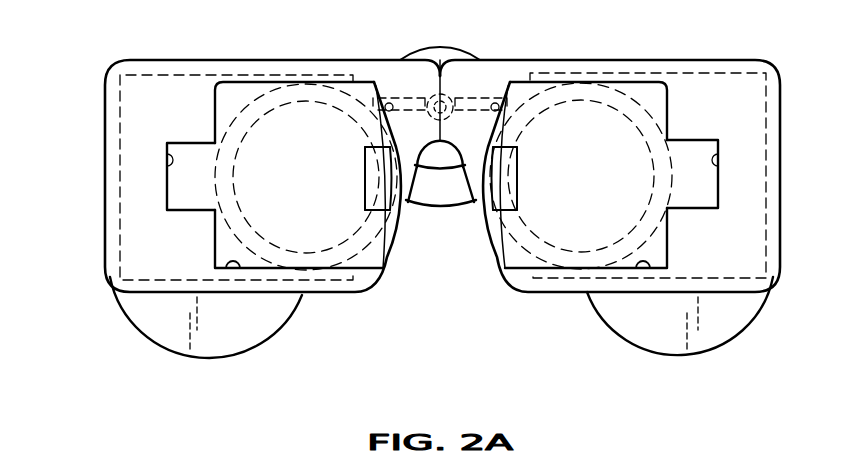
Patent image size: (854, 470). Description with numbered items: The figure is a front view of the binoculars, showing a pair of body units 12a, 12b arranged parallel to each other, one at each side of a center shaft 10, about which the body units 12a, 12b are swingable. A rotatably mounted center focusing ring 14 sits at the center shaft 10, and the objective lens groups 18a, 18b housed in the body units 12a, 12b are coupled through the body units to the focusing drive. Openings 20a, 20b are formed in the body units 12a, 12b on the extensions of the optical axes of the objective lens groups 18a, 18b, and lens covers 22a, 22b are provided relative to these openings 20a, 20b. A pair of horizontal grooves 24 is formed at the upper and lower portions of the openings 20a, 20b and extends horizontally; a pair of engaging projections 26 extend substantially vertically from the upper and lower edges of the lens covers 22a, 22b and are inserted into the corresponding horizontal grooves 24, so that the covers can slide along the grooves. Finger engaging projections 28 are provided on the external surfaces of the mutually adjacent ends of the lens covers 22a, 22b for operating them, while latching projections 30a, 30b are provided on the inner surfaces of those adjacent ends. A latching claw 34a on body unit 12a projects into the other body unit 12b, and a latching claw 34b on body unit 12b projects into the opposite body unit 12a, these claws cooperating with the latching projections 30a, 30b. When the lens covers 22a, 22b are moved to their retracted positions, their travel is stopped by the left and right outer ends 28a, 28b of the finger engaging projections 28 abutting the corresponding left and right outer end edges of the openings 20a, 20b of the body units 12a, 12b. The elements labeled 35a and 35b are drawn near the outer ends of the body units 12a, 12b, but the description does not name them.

The center shaft 10 is at (447, 160).
The body unit 12a is at (313, 296).
The body unit 12b is at (573, 296).
The center focusing ring 14 is at (427, 198).
The objective lens group 18a is at (222, 178).
The objective lens group 18b is at (668, 176).
The opening 20a is at (237, 272).
The opening 20b is at (645, 272).
The lens cover 22a is at (323, 237).
The lens cover 22b is at (570, 237).
The horizontal grooves 24 is at (143, 78).
The engaging projections 26 is at (308, 86).
The finger engaging projections 28 is at (372, 196).
The outer end of finger engaging projection 28a is at (364, 176).
The outer end of finger engaging projection 28b is at (518, 185).
The latching projection 30a is at (365, 158).
The latching projection 30b is at (517, 165).
The latching claw 34a is at (482, 115).
The latching claw 34b is at (403, 115).
The left notch 35a is at (167, 166).
The right notch 35b is at (721, 162).